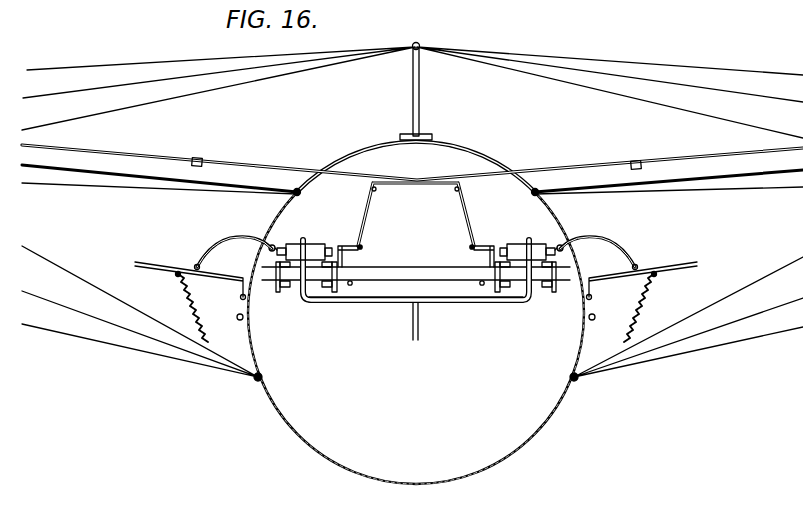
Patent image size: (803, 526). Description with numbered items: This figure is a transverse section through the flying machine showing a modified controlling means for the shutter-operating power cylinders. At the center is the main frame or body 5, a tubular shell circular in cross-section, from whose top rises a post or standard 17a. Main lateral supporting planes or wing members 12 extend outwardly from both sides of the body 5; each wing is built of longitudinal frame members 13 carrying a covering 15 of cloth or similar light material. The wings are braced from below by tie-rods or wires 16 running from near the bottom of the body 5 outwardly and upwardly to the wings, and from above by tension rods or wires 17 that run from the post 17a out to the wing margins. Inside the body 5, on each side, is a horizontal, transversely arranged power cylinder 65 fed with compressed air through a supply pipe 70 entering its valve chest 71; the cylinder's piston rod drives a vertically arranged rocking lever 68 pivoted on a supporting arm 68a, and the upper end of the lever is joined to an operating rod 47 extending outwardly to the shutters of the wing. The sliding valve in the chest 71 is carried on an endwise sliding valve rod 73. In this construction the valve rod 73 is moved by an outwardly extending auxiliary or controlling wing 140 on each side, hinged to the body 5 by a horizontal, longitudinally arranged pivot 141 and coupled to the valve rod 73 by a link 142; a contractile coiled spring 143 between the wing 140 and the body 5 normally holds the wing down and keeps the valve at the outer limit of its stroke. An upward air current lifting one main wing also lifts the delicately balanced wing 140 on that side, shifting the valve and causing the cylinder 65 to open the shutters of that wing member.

The main frame or body 5 is at (370, 144).
The main lateral supporting plane or wing member 12 is at (210, 197).
The longitudinal frame member 13 is at (156, 190).
The covering 15 is at (114, 172).
The tie-rod or wire 16 is at (34, 327).
The tension rod or wire 17 is at (72, 68).
The post or standard 17a is at (421, 62).
The operating rod 47 is at (144, 162).
The power cylinder 65 is at (305, 292).
The rocking lever 68 is at (372, 193).
The supporting arm 68a is at (360, 248).
The supply pipe 70 is at (312, 290).
The valve chest 71 is at (316, 244).
The valve rod 73 is at (271, 245).
The auxiliary or controlling wing 140 is at (162, 262).
The pivot 141 is at (236, 318).
The link 142 is at (220, 247).
The contractile coiled spring 143 is at (202, 292).